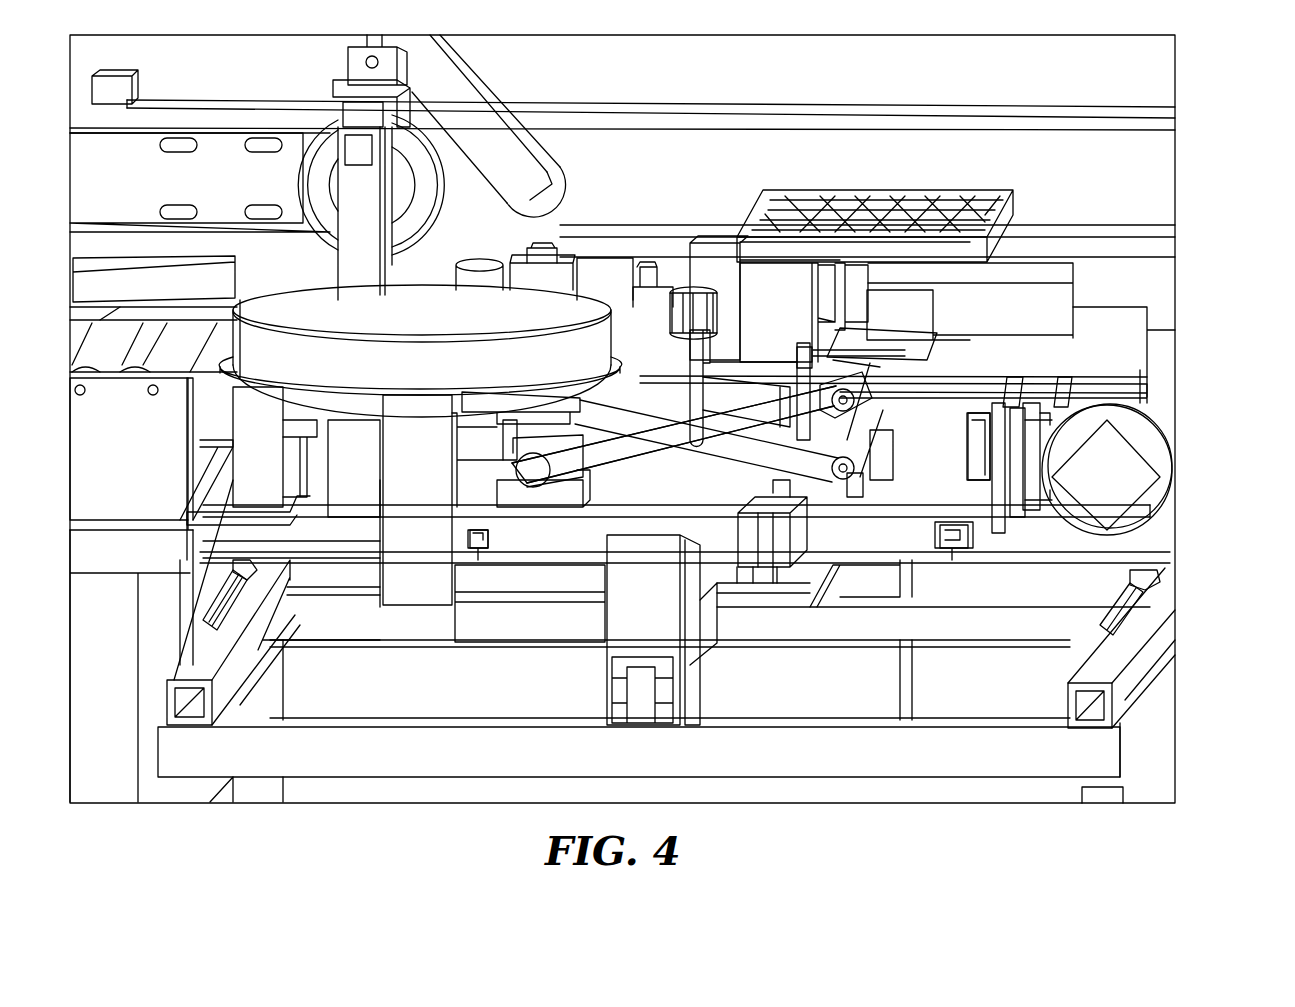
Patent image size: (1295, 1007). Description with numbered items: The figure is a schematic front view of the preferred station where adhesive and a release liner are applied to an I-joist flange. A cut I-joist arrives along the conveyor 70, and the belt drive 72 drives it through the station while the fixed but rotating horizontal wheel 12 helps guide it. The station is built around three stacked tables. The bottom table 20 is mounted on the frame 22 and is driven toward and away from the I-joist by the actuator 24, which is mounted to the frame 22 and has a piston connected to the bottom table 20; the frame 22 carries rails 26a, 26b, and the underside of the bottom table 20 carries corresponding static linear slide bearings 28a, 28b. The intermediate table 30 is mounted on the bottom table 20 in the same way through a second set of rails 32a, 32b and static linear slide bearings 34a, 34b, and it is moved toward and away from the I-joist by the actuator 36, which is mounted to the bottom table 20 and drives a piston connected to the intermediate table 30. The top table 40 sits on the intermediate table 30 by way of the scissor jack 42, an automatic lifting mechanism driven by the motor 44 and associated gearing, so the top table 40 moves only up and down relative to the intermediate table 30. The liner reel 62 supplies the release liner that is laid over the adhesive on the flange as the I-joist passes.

The horizontal wheel 12 is at (415, 275).
The belt drive 72 is at (752, 107).
The top table 40 is at (727, 350).
The liner reel 62 is at (446, 322).
The motor 44 is at (1045, 420).
The conveyor 70 is at (138, 459).
The intermediate table 30 is at (713, 494).
The actuator 36 is at (793, 532).
The bottom table 20 is at (1145, 547).
The frame 22 is at (1130, 670).
The actuator 24 is at (655, 618).
The rail 26a is at (1125, 620).
The rail 26b is at (205, 625).
The static linear slide bearing 28a is at (1160, 577).
The static linear slide bearing 28b is at (237, 568).
The rail 32a is at (953, 545).
The rail 32b is at (485, 555).
The static linear slide bearing 34a is at (990, 545).
The static linear slide bearing 34b is at (518, 535).
The scissor jack 42 is at (625, 430).